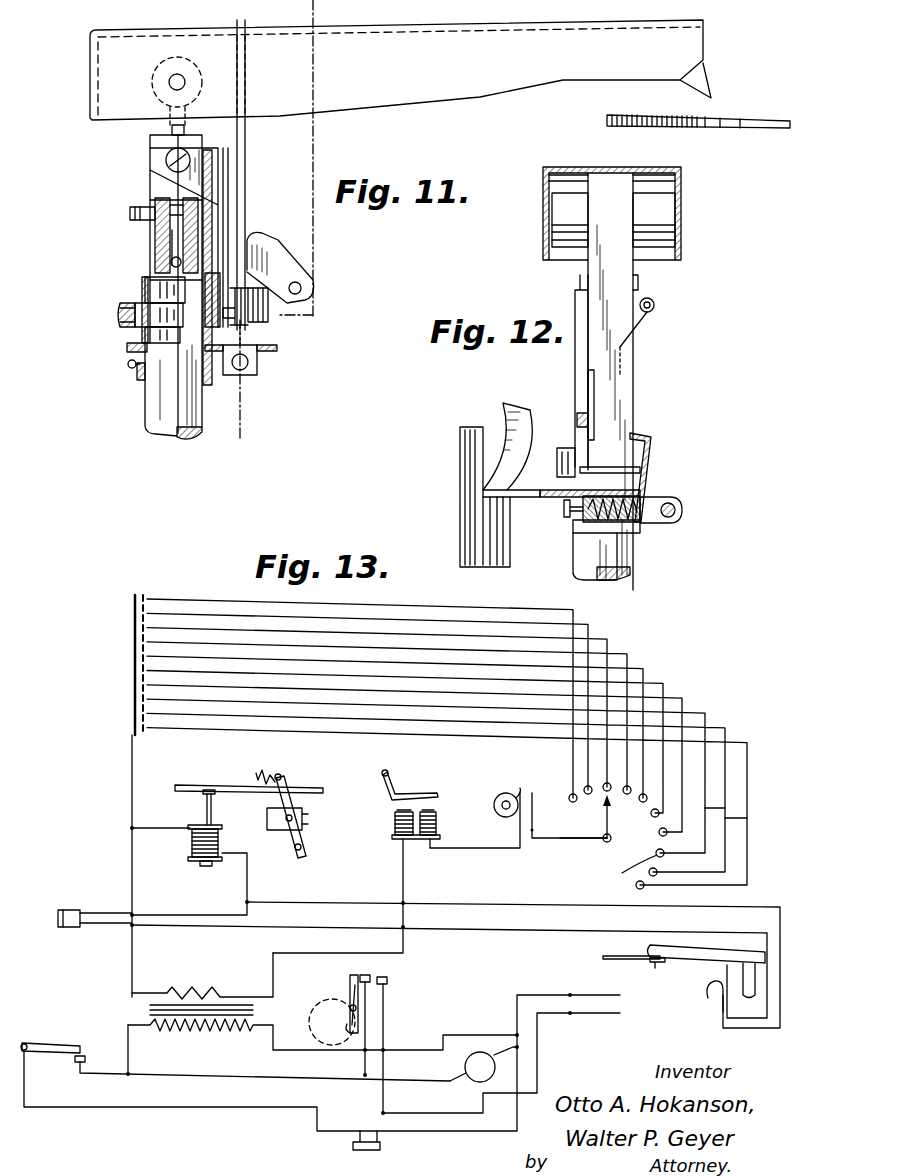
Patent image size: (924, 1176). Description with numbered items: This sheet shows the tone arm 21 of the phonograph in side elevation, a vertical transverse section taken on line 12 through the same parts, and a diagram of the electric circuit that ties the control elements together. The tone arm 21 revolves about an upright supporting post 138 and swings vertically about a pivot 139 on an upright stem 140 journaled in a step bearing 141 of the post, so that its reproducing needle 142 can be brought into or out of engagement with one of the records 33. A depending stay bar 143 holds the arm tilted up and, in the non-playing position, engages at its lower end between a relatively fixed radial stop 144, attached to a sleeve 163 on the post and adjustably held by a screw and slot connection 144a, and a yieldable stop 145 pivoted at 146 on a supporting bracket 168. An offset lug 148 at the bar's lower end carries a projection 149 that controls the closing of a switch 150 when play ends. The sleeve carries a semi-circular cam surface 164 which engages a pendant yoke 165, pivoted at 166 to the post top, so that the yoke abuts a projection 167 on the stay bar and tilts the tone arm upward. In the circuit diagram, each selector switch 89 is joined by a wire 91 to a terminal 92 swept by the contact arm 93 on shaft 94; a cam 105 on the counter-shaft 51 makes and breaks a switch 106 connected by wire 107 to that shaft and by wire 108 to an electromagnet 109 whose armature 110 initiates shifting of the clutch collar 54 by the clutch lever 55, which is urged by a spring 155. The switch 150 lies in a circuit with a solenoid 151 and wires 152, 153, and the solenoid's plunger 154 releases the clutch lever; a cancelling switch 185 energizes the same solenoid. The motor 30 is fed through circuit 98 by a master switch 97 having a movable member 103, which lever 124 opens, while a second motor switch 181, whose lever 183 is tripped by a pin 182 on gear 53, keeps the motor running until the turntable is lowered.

In FIG. 11, the section line 12- 12 is at (305, 6).
In FIG. 11, the tone arm 21 is at (396, 70).
In FIG. 12, the tone arm 21 is at (683, 206).
In FIG. 13, the tone arm 21 is at (686, 950).
In FIG. 13, the electric motor 30 is at (468, 1084).
In FIG. 11, the records 33 is at (764, 130).
In FIG. 13, the records 33 is at (603, 958).
In FIG. 13, the counter-shaft 51 is at (494, 820).
In FIG. 13, the gear 53 is at (307, 1018).
In FIG. 13, the clutch collar 54 is at (308, 818).
In FIG. 13, the clutch-actuating lever 55 is at (290, 781).
In FIG. 13, the electric switch 89 is at (147, 693).
In FIG. 13, the wire 91 is at (725, 808).
In FIG. 13, the terminal 92 is at (636, 886).
In FIG. 13, the contact arm 93 is at (630, 822).
In FIG. 13, the shaft 94 is at (605, 843).
In FIG. 13, the master switch 97 is at (86, 1058).
In FIG. 13, the circuit 98 is at (172, 1082).
In FIG. 13, the movable member 103 is at (58, 1040).
In FIG. 13, the cam 105 is at (500, 795).
In FIG. 13, the switch 106 is at (540, 790).
In FIG. 13, the wire 107 is at (590, 845).
In FIG. 13, the wire 108 is at (466, 848).
In FIG. 13, the electromagnet 109 is at (396, 826).
In FIG. 13, the armature 110 is at (418, 791).
In FIG. 13, the lever 124 is at (213, 786).
In FIG. 11, the supporting post 138 is at (150, 413).
In FIG. 12, the supporting post 138 is at (640, 570).
In FIG. 13, the supporting post 138 is at (752, 975).
In FIG. 11, the pivot 139 is at (170, 84).
In FIG. 12, the pivot 139 is at (681, 243).
In FIG. 11, the upright stem 140 is at (175, 128).
In FIG. 11, the step bearing 141 is at (172, 262).
In FIG. 11, the reproducing needle 142 is at (712, 88).
In FIG. 13, the reproducing needle 142 is at (661, 976).
In FIG. 11, the stay bar 143 is at (248, 150).
In FIG. 12, the stay bar 143 is at (622, 285).
In FIG. 11, the radial stop 144 is at (120, 309).
In FIG. 12, the radial stop 144 is at (563, 450).
In FIG. 11, the screw and slot connection 144a is at (118, 318).
In FIG. 11, the yieldable stop 145 is at (260, 345).
In FIG. 12, the yieldable stop 145 is at (655, 458).
In FIG. 12, the pivot 146 is at (676, 510).
In FIG. 11, the offset lug 148 is at (312, 268).
In FIG. 12, the offset lug 148 is at (596, 390).
In FIG. 13, the offset lug 148 is at (720, 1010).
In FIG. 11, the projection 149 is at (282, 308).
In FIG. 12, the projection 149 is at (578, 413).
In FIG. 12, the switch 150 is at (470, 430).
In FIG. 13, the switch 150 is at (724, 1030).
In FIG. 13, the solenoid 151 is at (190, 858).
In FIG. 13, the wire 152 is at (247, 868).
In FIG. 13, the wire 153 is at (192, 826).
In FIG. 13, the plunger 154 is at (214, 814).
In FIG. 13, the spring 155 is at (258, 764).
In FIG. 11, the sleeve 163 is at (142, 290).
In FIG. 12, the sleeve 163 is at (640, 473).
In FIG. 11, the cam surface 164 is at (142, 334).
In FIG. 11, the pendant yoke 165 is at (228, 213).
In FIG. 11, the pivot 166 is at (178, 166).
In FIG. 12, the pivot 166 is at (653, 312).
In FIG. 11, the projection 167 is at (268, 336).
In FIG. 11, the supporting bracket 168 is at (137, 372).
In FIG. 12, the supporting bracket 168 is at (577, 524).
In FIG. 13, the second motor switch 181 is at (380, 972).
In FIG. 13, the trip pin 182 is at (360, 1030).
In FIG. 13, the lever 183 is at (350, 985).
In FIG. 13, the cancelling switch 185 is at (70, 900).